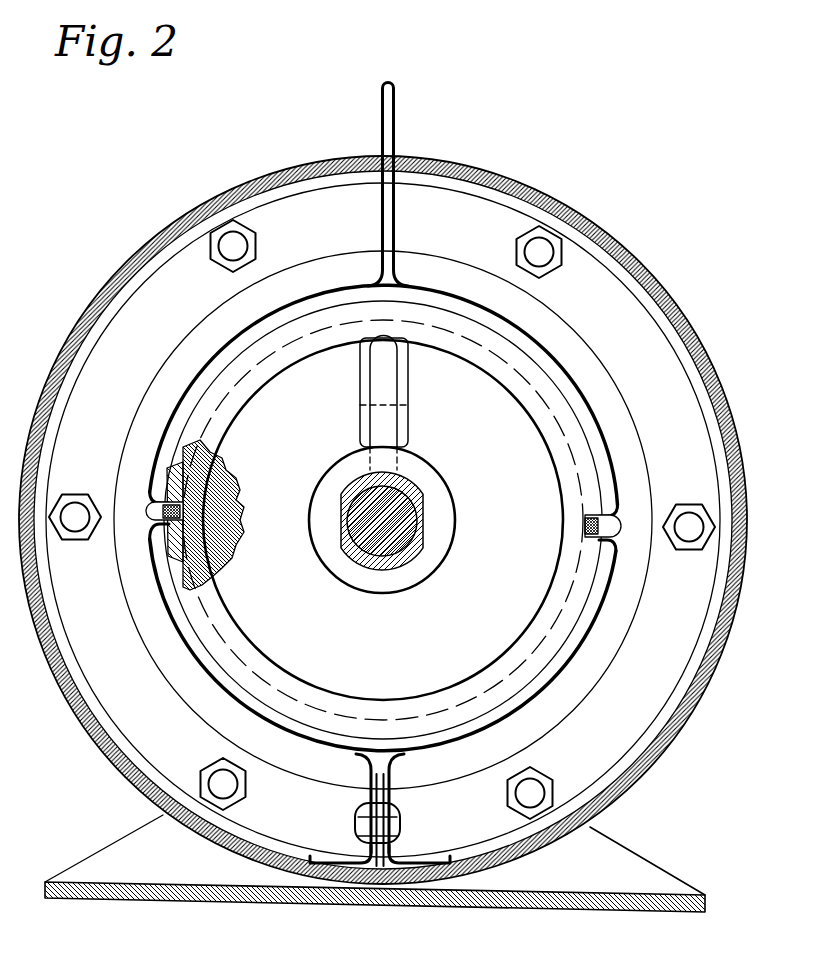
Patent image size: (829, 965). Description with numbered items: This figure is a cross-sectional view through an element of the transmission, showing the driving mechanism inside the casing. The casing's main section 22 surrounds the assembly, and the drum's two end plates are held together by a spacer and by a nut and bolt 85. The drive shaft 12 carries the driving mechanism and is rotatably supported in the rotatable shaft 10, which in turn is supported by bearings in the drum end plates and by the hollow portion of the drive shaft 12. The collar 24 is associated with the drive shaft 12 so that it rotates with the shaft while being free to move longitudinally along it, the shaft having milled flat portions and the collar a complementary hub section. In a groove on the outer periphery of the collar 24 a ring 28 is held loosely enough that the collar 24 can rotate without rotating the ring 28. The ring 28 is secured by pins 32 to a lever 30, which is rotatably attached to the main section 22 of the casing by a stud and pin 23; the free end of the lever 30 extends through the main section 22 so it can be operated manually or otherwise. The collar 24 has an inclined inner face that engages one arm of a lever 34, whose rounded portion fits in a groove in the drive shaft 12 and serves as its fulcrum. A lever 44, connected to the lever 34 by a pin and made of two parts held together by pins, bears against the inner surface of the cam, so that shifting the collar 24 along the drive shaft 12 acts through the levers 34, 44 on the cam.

The rotatable shaft 10 is at (368, 510).
The drive shaft 12 is at (422, 513).
The main section 22 is at (537, 183).
The stud and pin 23 is at (404, 828).
The collar 24 is at (396, 521).
The ring 28 is at (170, 483).
The lever 30 is at (397, 121).
The pins 32 is at (143, 518).
The lever 34 is at (387, 366).
The lever 44 is at (408, 423).
The nut and bolt 85 is at (553, 278).